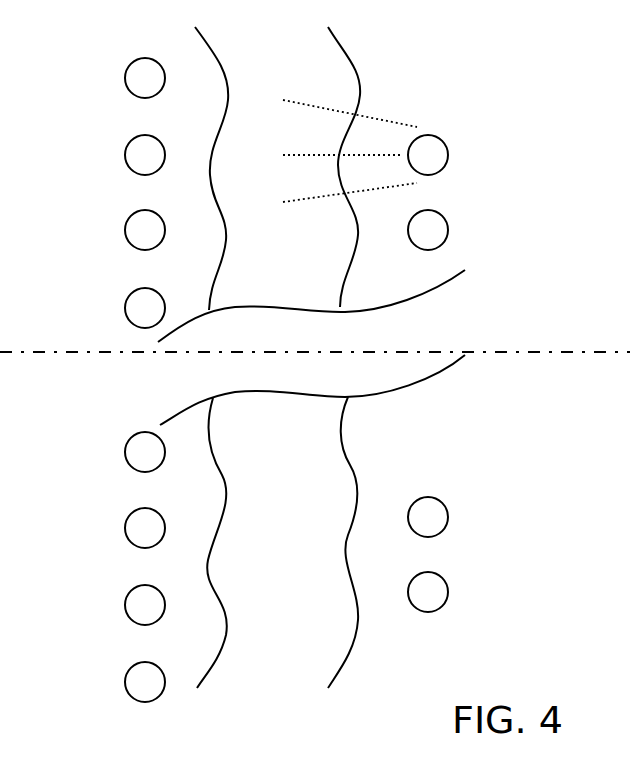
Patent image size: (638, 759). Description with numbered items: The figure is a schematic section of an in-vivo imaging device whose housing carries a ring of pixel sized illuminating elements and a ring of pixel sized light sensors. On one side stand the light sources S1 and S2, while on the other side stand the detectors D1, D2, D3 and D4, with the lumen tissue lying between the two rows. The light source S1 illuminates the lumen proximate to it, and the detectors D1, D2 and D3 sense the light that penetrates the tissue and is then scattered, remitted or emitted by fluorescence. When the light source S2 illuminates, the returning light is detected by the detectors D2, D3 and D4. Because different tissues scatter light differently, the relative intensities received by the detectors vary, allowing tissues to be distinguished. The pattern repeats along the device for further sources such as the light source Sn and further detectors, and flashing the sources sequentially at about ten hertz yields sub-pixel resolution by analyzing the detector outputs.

The detector D1 is at (121, 78).
The detector D2 is at (121, 155).
The detector D3 is at (121, 230).
The detector D4 is at (121, 308).
The light source S1 is at (452, 155).
The light source S2 is at (452, 230).
The source n Sn is at (452, 517).